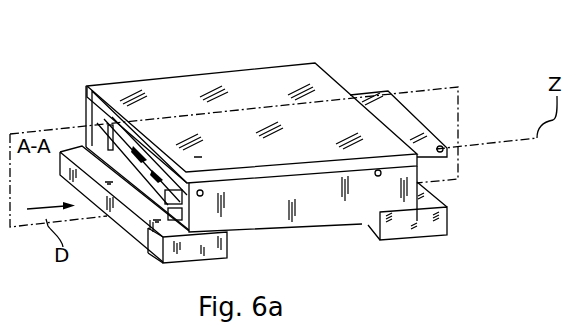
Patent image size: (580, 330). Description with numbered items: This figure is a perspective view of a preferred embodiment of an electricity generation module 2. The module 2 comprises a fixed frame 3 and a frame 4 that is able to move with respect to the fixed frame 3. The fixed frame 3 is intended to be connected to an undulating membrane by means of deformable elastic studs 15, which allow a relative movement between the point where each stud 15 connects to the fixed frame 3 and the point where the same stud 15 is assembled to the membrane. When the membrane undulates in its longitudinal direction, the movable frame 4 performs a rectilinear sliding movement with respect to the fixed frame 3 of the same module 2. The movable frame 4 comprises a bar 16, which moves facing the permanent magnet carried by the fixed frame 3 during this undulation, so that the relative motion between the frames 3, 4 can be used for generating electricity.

The electricity generation module 2 is at (70, 63).
The fixed frame 3 is at (328, 221).
The movable frame 4 is at (160, 178).
The deformable elastic stud 15 is at (160, 248).
The bar 16 is at (433, 139).